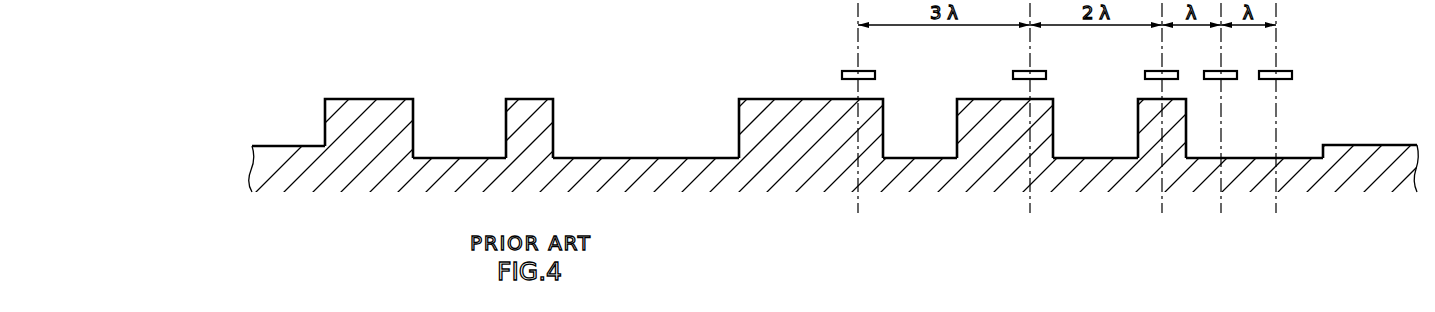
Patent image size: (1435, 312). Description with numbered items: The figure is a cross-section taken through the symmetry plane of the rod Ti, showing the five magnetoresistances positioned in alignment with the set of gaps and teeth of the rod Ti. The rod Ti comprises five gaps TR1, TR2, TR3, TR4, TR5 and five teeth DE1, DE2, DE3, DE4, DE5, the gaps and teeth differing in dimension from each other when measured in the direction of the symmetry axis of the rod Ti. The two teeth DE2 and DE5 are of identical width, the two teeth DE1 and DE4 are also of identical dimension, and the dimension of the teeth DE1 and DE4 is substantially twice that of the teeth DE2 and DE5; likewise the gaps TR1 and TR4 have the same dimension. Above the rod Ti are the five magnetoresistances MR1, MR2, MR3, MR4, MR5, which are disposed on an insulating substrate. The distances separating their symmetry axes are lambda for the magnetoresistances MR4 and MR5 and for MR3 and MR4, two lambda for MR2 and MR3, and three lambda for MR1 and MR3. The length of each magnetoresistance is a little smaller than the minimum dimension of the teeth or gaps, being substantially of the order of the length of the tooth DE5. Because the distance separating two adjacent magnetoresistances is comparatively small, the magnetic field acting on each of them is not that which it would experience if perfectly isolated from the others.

The rod Ti is at (311, 111).
The tooth DE1 is at (406, 99).
The tooth DE2 is at (524, 100).
The tooth DE3 is at (797, 100).
The tooth DE4 is at (984, 100).
The tooth DE5 is at (1143, 100).
The gap TR1 is at (455, 160).
The gap TR2 is at (628, 160).
The gap TR3 is at (917, 160).
The gap TR4 is at (1093, 160).
The gap TR5 is at (1238, 160).
The magnetoresistance MR1 is at (860, 70).
The magnetoresistance MR2 is at (1031, 70).
The magnetoresistance MR3 is at (1163, 70).
The magnetoresistance MR4 is at (1222, 70).
The magnetoresistance MR5 is at (1278, 70).